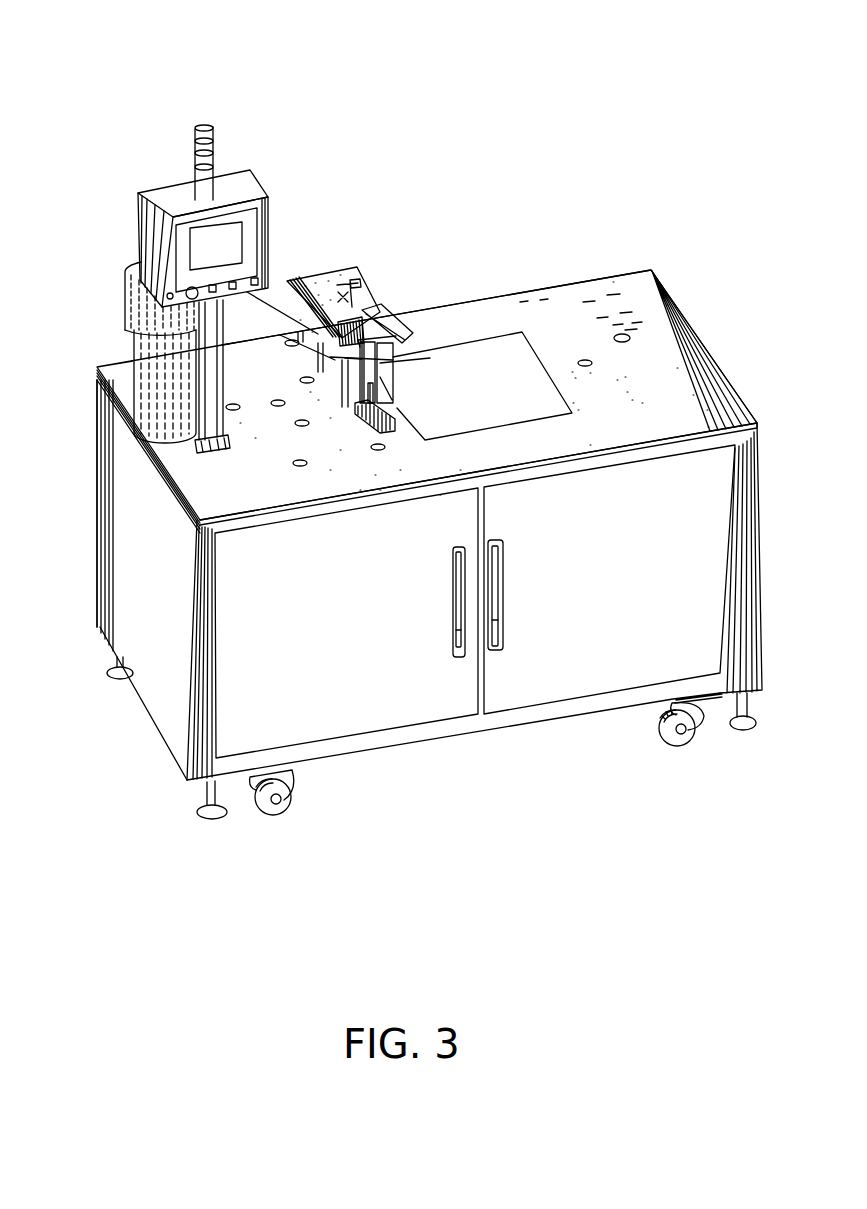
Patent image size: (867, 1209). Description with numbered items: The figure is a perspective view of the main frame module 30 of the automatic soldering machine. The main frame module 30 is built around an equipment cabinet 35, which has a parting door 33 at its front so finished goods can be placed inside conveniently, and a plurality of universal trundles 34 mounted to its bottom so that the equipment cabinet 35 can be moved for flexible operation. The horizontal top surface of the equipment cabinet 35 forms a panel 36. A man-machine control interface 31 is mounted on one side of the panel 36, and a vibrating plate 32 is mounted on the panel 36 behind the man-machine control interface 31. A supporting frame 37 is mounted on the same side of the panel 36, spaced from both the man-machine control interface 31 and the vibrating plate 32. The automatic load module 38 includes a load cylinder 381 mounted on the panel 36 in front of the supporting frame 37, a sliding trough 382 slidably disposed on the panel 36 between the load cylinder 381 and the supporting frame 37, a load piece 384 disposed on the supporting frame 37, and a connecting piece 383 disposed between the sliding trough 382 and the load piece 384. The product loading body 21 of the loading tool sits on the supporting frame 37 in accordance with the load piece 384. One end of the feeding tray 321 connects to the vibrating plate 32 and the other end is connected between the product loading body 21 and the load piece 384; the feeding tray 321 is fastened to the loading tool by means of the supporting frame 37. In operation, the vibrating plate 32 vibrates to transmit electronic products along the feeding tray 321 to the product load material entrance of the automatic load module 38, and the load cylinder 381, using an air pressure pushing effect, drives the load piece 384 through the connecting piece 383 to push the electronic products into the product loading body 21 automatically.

The main frame module 30 is at (86, 45).
The man-machine control interface 31 is at (140, 220).
The vibrating plate 32 is at (122, 300).
The feeding tray 321 is at (284, 312).
The supporting frame 37 is at (350, 270).
The product loading body 21 is at (367, 303).
The load piece 384 is at (412, 343).
The automatic load module 38 is at (423, 330).
The connecting piece 383 is at (378, 370).
The sliding trough 382 is at (373, 402).
The load cylinder 381 is at (392, 419).
The panel 36 is at (638, 290).
The equipment cabinet 35 is at (190, 658).
The parting door 33 is at (430, 700).
The universal trundles 34 is at (682, 748).